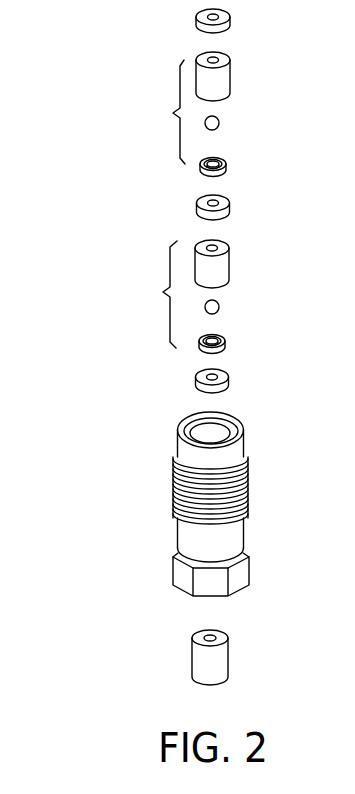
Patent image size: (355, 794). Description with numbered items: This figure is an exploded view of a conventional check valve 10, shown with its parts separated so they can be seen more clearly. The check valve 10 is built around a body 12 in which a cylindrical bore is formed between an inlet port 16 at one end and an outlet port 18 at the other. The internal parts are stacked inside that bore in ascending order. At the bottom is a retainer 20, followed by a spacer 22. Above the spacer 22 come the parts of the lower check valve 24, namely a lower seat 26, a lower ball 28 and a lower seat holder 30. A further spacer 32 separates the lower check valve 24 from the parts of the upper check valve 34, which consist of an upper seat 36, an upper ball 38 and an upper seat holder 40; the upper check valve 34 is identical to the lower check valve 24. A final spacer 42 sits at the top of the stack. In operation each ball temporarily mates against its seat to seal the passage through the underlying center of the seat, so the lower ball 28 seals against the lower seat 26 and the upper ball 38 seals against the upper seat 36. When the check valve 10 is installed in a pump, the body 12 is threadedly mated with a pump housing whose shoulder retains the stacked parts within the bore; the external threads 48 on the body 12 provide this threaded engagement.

The check valve 10 is at (80, 568).
The body 12 is at (238, 537).
The inlet port 16 is at (229, 598).
The outlet port 18 is at (220, 437).
The retainer 20 is at (225, 675).
The spacer 22 is at (230, 378).
The lower check valve 24 is at (158, 301).
The lower seat 26 is at (225, 340).
The lower ball 28 is at (219, 305).
The lower seat holder 30 is at (230, 265).
The spacer 32 is at (230, 207).
The upper check valve 34 is at (164, 122).
The upper seat 36 is at (226, 164).
The upper ball 38 is at (219, 121).
The upper seat holder 40 is at (230, 77).
The spacer 42 is at (230, 18).
The external threads 48 is at (246, 484).